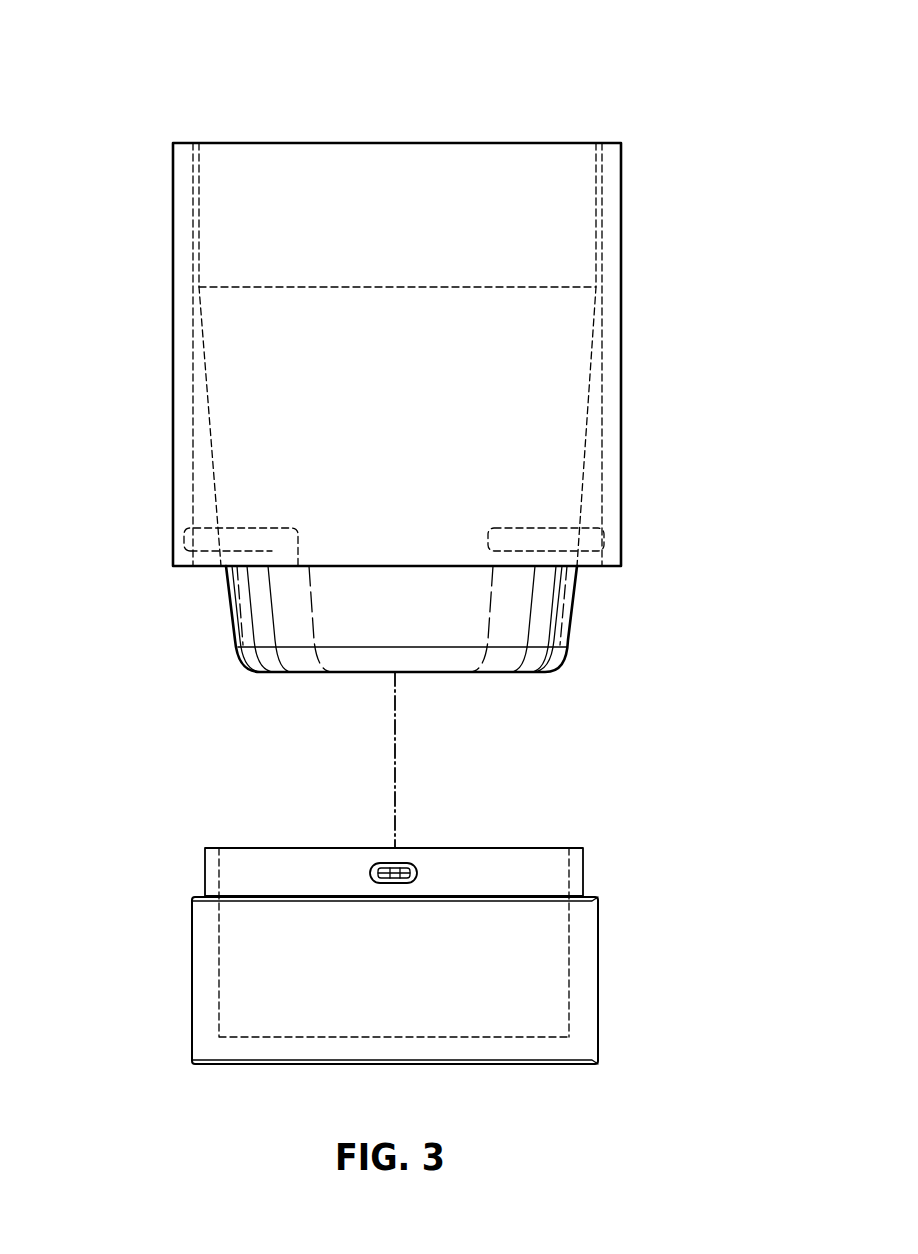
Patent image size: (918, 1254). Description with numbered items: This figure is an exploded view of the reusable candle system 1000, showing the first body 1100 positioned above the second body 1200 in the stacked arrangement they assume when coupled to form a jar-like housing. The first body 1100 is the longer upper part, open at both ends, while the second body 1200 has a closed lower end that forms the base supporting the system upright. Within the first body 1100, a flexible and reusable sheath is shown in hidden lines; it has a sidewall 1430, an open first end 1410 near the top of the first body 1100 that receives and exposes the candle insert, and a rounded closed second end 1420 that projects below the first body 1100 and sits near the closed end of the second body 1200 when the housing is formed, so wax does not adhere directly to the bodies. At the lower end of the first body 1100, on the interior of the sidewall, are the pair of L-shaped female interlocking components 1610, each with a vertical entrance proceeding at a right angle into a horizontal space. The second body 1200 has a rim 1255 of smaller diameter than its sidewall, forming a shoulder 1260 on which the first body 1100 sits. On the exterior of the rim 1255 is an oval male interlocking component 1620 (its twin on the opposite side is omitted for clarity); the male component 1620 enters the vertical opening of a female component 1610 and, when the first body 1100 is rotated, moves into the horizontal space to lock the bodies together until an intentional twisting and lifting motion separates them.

The reusable candle system 1000 is at (686, 97).
The first body 1100 is at (173, 176).
The second body 1200 is at (392, 979).
The rim 1255 is at (583, 862).
The shoulder 1260 is at (598, 897).
The open first end 1410 is at (550, 236).
The closed second end 1420 is at (568, 646).
The sidewall 1430 is at (550, 359).
The female interlocking components 1610 is at (590, 540).
The male interlocking component 1620 is at (391, 862).